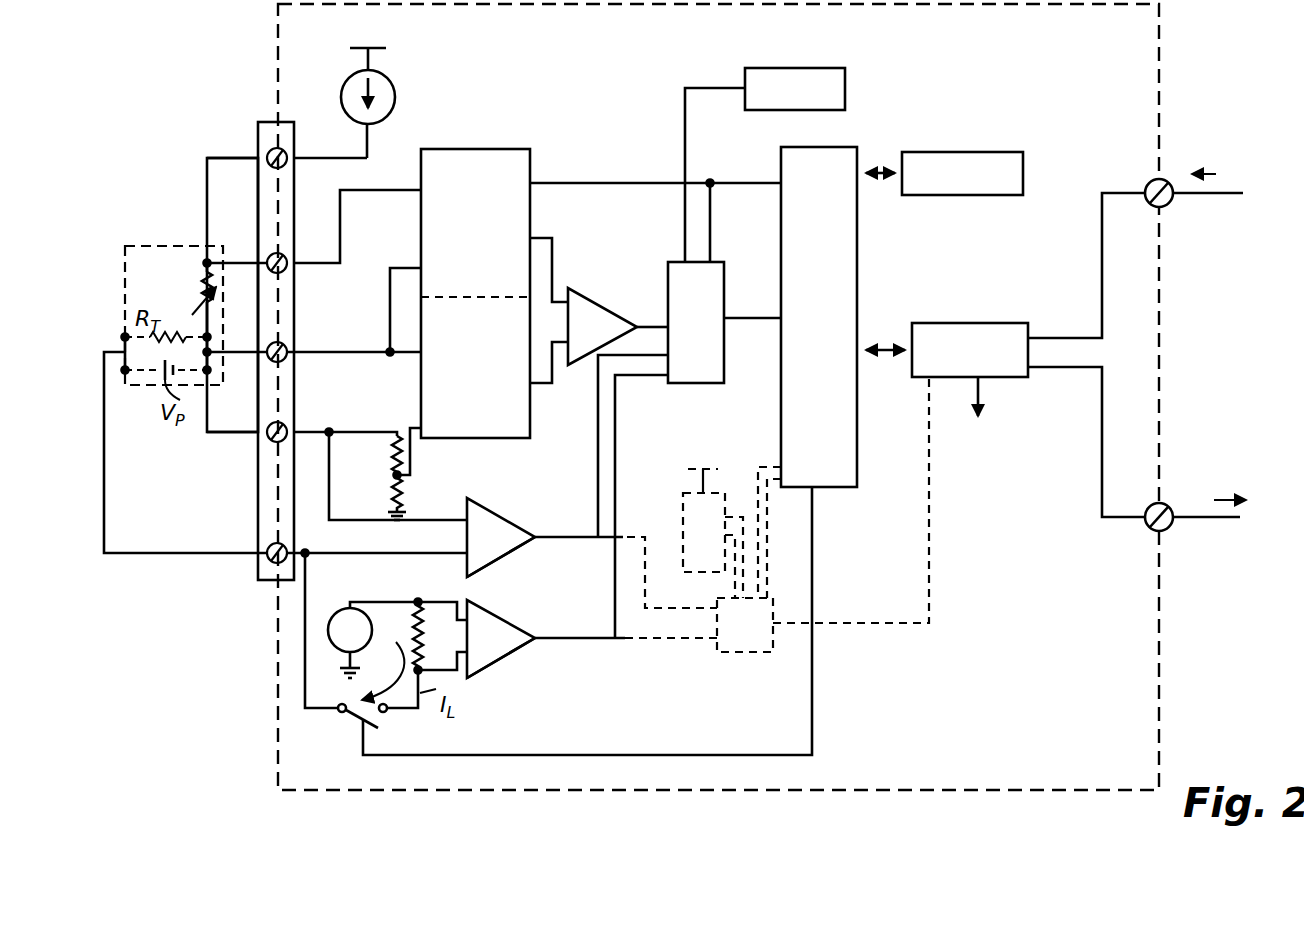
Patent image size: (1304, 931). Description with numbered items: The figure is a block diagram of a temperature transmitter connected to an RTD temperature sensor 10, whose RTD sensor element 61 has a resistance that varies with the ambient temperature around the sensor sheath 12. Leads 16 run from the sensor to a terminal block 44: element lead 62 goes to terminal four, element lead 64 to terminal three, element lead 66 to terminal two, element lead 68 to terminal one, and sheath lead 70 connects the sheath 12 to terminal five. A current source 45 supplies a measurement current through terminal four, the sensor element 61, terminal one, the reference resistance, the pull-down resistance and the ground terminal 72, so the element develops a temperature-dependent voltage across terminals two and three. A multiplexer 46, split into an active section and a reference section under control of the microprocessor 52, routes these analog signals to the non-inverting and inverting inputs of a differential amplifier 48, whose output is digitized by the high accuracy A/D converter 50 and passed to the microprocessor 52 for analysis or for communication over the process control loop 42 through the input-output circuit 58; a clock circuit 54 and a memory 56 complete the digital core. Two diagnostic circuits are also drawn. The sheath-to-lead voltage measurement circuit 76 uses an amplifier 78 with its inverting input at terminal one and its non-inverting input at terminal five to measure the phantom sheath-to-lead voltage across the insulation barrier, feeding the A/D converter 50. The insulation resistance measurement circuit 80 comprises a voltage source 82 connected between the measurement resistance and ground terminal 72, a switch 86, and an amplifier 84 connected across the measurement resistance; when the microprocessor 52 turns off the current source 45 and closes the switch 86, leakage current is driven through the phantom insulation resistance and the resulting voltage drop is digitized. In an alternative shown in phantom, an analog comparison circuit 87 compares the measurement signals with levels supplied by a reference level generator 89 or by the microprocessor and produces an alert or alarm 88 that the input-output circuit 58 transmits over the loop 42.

The RTD temperature sensor 10 is at (143, 243).
The sensor sheath 12 is at (173, 246).
The leads 16 is at (200, 160).
The process control loop 42 is at (1203, 195).
The terminal block 44 is at (288, 122).
The current source 45 is at (388, 80).
The multiplexer 46 is at (456, 149).
The differential amplifier 48 is at (592, 303).
The A/D converter 50 is at (728, 270).
The microprocessor 52 is at (843, 147).
The clock circuit 54 is at (800, 68).
The memory 56 is at (955, 152).
The input-output circuit 58 is at (935, 323).
The RTD sensor element 61 is at (217, 293).
The element lead 62 is at (225, 158).
The element lead 64 is at (243, 263).
The element lead 66 is at (243, 356).
The element lead 68 is at (226, 432).
The sheath lead 70 is at (204, 553).
The ground terminal 72 is at (402, 513).
The sheath-to-lead voltage measurement circuit 76 is at (516, 562).
The amplifier 78 is at (494, 512).
The insulation resistance measurement circuit 80 is at (508, 666).
The voltage source 82 is at (336, 612).
The amplifier 84 is at (506, 620).
The switch 86 is at (357, 721).
The analog comparison circuit 87 is at (740, 652).
The alert or alarm 88 is at (851, 624).
The reference level generator 89 is at (683, 512).